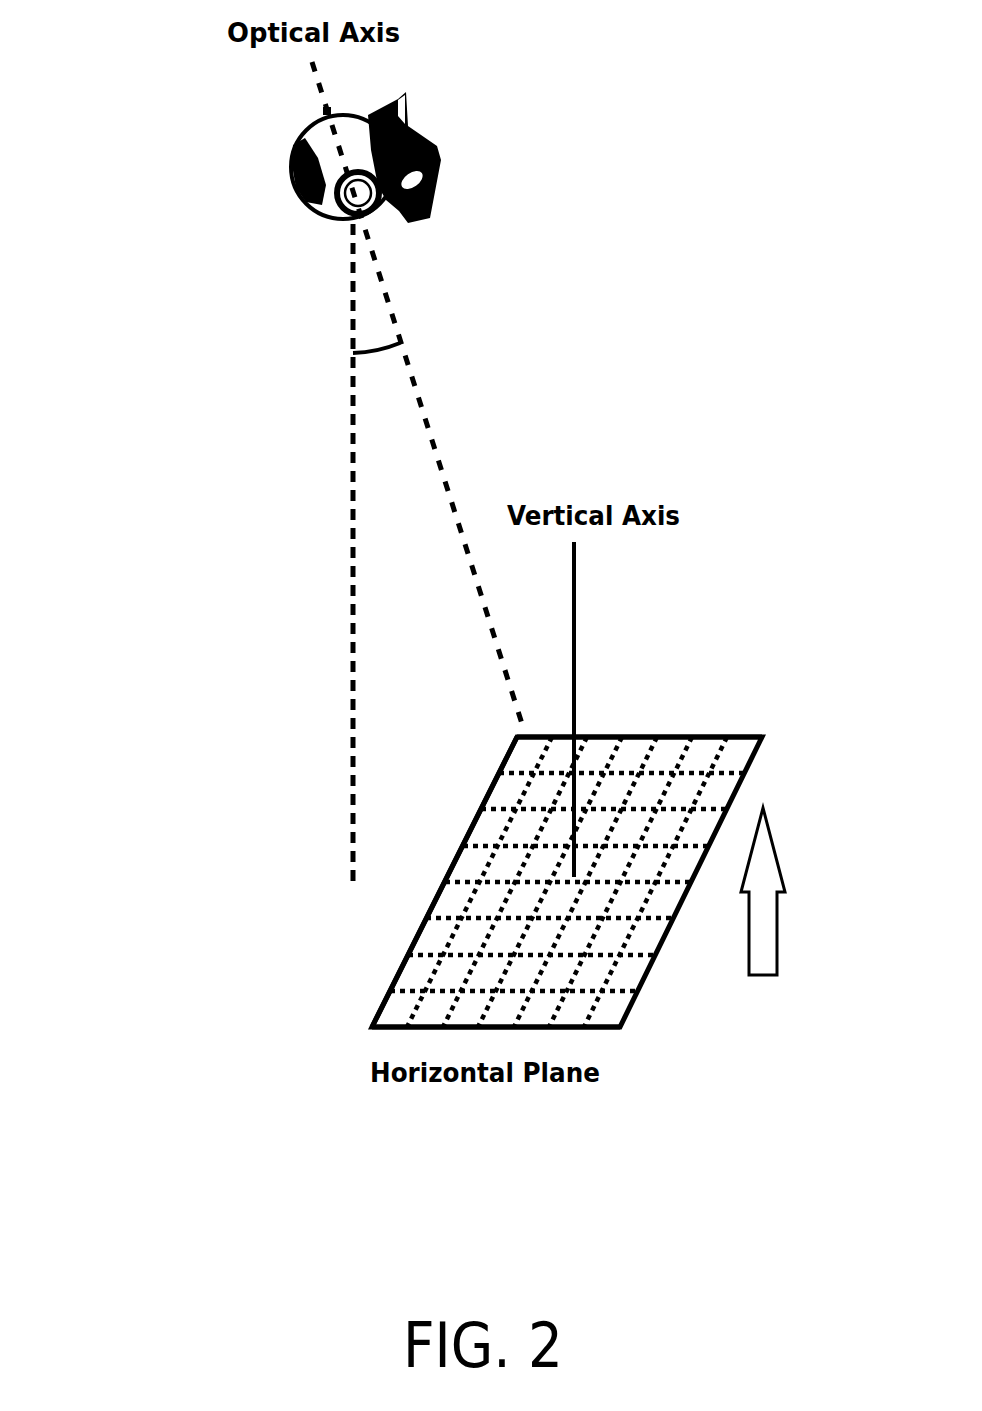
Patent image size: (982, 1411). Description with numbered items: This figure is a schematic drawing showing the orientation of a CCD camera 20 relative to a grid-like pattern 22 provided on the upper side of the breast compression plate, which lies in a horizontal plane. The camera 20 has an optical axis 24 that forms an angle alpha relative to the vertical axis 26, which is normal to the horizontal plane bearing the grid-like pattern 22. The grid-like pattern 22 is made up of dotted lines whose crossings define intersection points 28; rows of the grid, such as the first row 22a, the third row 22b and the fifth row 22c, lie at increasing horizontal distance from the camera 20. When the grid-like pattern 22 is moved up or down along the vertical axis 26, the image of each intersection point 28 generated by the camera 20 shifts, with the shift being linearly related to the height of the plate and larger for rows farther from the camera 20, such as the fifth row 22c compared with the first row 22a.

The camera 20 is at (307, 200).
The optical axis 24 is at (435, 443).
The vertical axis 26 is at (353, 597).
The grid-like pattern 22 is at (752, 767).
The first row 22a is at (372, 1028).
The third row 22b is at (578, 735).
The fifth row 22c is at (558, 1028).
The intersection point 28 is at (450, 915).